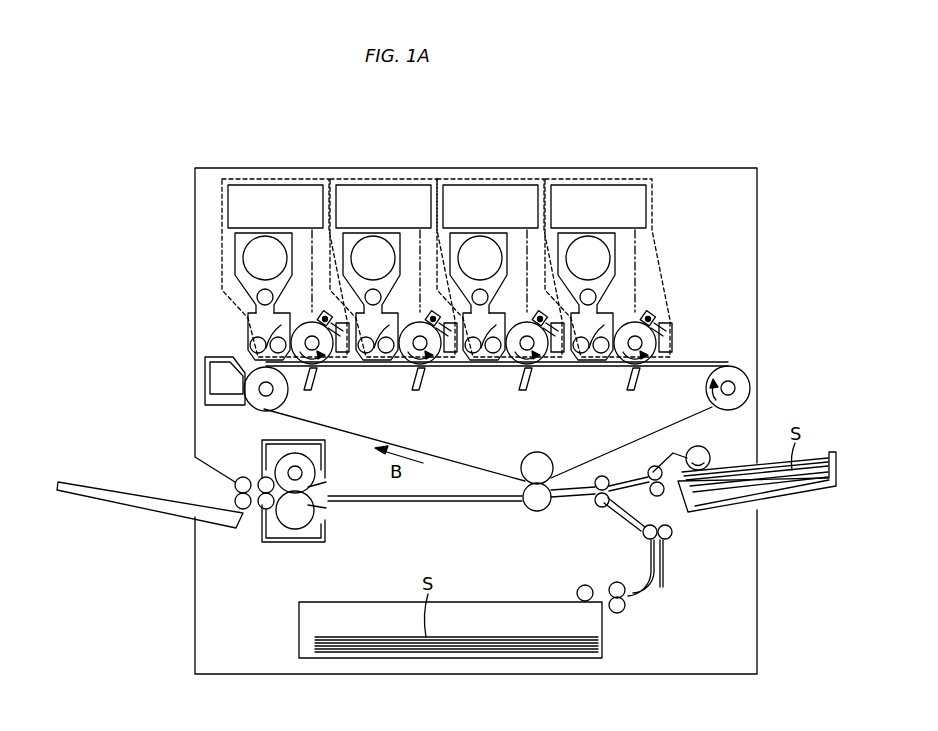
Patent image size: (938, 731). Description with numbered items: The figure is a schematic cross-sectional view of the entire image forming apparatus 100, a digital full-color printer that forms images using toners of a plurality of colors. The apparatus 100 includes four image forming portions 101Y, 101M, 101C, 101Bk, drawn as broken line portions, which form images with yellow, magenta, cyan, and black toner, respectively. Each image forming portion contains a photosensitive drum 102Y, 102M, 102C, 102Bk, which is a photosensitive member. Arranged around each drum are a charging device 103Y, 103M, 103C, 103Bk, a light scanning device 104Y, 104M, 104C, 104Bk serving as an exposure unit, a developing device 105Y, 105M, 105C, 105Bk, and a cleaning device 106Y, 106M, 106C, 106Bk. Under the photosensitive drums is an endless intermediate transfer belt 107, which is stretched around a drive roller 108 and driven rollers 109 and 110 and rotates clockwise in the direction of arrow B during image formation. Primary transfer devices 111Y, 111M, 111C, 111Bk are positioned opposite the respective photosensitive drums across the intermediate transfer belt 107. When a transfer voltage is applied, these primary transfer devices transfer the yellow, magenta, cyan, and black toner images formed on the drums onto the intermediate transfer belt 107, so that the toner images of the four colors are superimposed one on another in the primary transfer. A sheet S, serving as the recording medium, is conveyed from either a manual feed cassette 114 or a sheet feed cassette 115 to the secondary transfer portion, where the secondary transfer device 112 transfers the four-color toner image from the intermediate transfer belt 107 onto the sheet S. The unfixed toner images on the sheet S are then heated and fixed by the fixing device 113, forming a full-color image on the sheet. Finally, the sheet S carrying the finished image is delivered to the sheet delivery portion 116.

The image forming apparatus 100 is at (714, 166).
The image forming portion 101Y is at (250, 178).
The image forming portion 101M is at (360, 178).
The image forming portion 101C is at (468, 178).
The image forming portion 101Bk is at (578, 178).
The photosensitive drum 102Y is at (318, 372).
The photosensitive drum 102M is at (424, 370).
The photosensitive drum 102C is at (535, 370).
The photosensitive drum 102Bk is at (656, 338).
The charging device 103Y is at (326, 311).
The charging device 103M is at (434, 311).
The charging device 103C is at (540, 311).
The charging device 103Bk is at (652, 313).
The light scanning device 104Y is at (279, 183).
The light scanning device 104M is at (394, 183).
The light scanning device 104C is at (492, 183).
The light scanning device 104Bk is at (614, 183).
The developing device 105Y is at (250, 333).
The developing device 105M is at (371, 362).
The developing device 105C is at (480, 362).
The developing device 105Bk is at (598, 362).
The cleaning device 106Y is at (341, 355).
The cleaning device 106M is at (449, 355).
The cleaning device 106C is at (557, 355).
The cleaning device 106Bk is at (672, 349).
The intermediate transfer belt 107 is at (466, 503).
The drive roller 108 is at (751, 388).
The driven roller 109 is at (242, 397).
The driven roller 110 is at (554, 461).
The primary transfer device 111Y is at (302, 398).
The primary transfer device 111M is at (416, 394).
The primary transfer device 111C is at (524, 394).
The primary transfer device 111Bk is at (640, 392).
The secondary transfer device 112 is at (538, 511).
The fixing device 113 is at (294, 545).
The manual feed cassette 114 is at (797, 500).
The sheet feed cassette 115 is at (298, 615).
The sheet delivery portion 116 is at (131, 488).